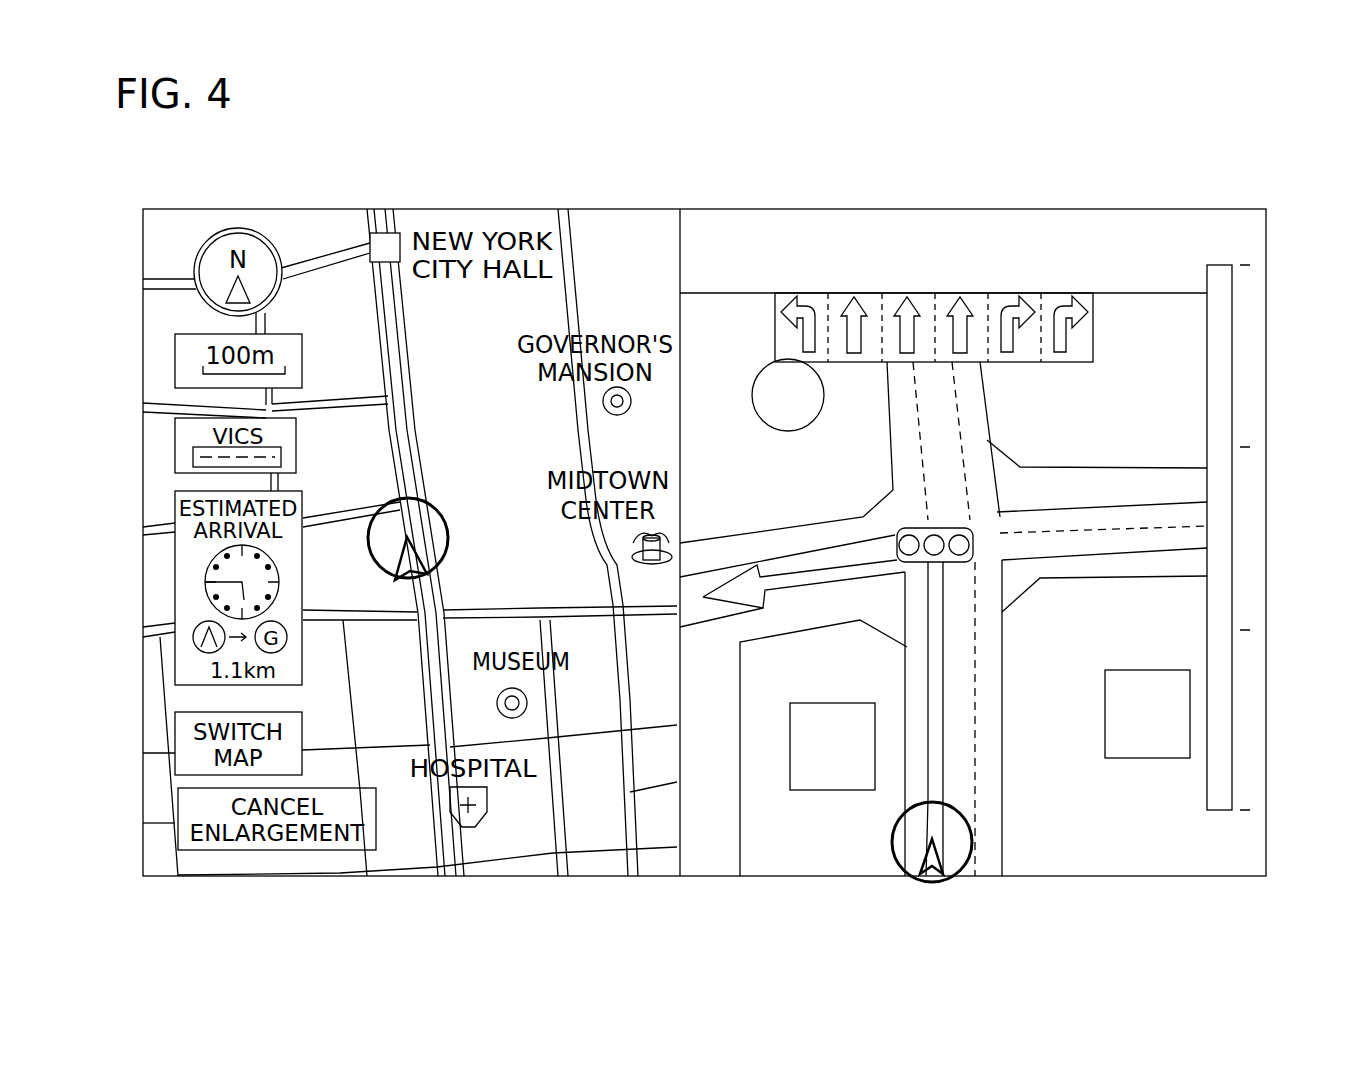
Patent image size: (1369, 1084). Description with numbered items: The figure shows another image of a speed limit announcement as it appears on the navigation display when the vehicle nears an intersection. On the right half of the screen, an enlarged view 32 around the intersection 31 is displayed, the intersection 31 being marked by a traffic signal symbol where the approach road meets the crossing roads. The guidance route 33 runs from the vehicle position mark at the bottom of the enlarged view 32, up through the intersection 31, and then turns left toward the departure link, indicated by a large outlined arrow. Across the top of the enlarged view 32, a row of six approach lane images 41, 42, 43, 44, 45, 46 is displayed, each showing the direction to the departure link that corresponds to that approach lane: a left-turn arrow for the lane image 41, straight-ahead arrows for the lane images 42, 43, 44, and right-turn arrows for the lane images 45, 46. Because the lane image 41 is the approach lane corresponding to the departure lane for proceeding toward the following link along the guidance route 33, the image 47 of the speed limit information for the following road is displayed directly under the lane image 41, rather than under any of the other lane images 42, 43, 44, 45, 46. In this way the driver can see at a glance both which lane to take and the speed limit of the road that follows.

The intersection 31 is at (975, 541).
The enlarged view 32 is at (1105, 412).
The guidance route 33 is at (945, 700).
The approach lane image 41 is at (812, 293).
The approach lane image 42 is at (866, 293).
The approach lane image 43 is at (921, 293).
The approach lane image 44 is at (967, 293).
The approach lane image 45 is at (1010, 293).
The approach lane image 46 is at (1083, 293).
The speed limit information image 47 is at (763, 370).